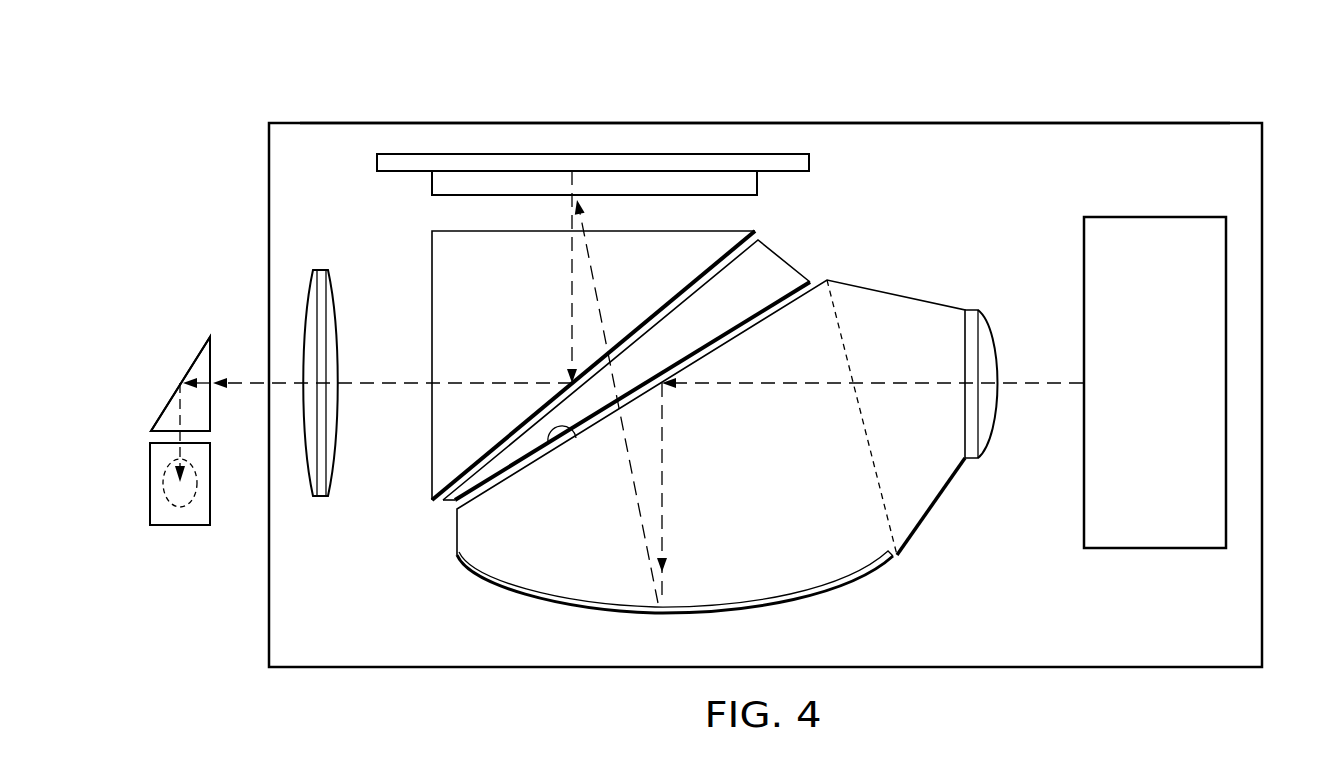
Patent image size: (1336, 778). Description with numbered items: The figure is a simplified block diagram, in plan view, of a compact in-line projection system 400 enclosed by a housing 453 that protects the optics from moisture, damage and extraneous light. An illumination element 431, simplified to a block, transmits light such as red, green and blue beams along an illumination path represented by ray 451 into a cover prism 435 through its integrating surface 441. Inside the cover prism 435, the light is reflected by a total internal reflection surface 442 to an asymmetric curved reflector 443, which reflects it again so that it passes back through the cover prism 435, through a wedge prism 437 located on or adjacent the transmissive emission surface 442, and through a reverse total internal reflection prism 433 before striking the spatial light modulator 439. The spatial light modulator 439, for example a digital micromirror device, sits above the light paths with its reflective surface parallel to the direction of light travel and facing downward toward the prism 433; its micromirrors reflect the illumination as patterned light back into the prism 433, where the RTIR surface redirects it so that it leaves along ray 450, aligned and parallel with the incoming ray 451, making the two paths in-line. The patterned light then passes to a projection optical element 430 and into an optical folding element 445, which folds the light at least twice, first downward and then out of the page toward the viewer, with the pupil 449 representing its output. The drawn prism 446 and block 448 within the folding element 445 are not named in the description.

The compact in-line projection system 400 is at (1030, 92).
The housing 453 is at (503, 115).
The spatial light modulator 439 is at (812, 163).
The reverse total internal reflection prism 433 is at (431, 255).
The wedge prism 437 is at (795, 270).
The cover prism 435 is at (466, 535).
The asymmetric curved reflector 443 is at (524, 597).
The total internal reflection surface 442 is at (549, 444).
The integrating surface 441 is at (998, 355).
The illumination element 431 is at (1134, 398).
The illumination path ray 451 is at (1020, 386).
The patterned light ray 450 is at (399, 386).
The projection optical element 430 is at (320, 498).
The optical folding element 445 is at (152, 322).
The prism 446 is at (167, 403).
The image sensor 448 is at (150, 505).
The pupil 449 is at (162, 480).